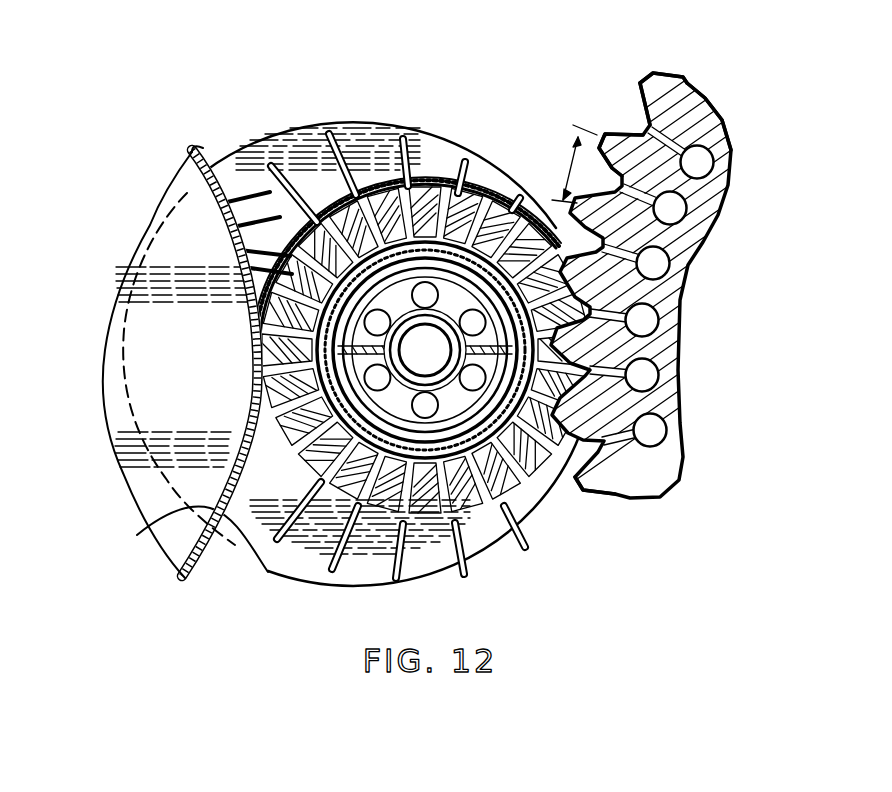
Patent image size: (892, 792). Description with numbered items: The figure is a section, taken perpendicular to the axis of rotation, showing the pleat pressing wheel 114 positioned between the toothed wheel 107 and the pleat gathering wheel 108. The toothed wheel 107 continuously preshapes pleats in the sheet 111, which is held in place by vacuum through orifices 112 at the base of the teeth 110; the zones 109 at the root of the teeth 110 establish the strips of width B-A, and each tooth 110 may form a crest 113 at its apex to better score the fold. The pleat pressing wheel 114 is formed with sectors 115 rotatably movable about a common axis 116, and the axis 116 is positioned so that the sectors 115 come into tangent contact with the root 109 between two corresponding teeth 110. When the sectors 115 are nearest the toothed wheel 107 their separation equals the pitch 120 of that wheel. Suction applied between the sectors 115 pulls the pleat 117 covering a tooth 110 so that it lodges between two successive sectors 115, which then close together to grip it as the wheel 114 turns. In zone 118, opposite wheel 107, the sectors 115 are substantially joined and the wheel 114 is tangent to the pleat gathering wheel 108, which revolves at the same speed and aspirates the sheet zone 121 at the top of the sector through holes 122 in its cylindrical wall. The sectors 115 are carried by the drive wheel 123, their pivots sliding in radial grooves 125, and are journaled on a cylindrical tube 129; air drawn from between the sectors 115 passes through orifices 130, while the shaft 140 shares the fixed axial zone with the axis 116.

The toothed wheel 107 is at (668, 452).
The pleat gathering wheel 108 is at (137, 535).
The zones at the root of the teeth 109 is at (650, 120).
The teeth 110 is at (660, 93).
The sheet 111 is at (620, 125).
The orifices 112 is at (713, 113).
The crest 113 is at (580, 472).
The pleat pressing wheel 114 is at (420, 462).
The sectors 115 is at (450, 512).
The common axis 116 is at (425, 252).
The pleat 117 is at (667, 390).
The zone 118 is at (255, 350).
The pitch 120 is at (570, 173).
The sheet zone 121 is at (513, 522).
The holes 122 is at (228, 243).
The drive wheel 123 is at (363, 140).
The radial grooves 125 is at (290, 170).
The cylindrical tube 129 is at (358, 480).
The orifices 130 is at (432, 352).
The shaft 140 is at (258, 485).